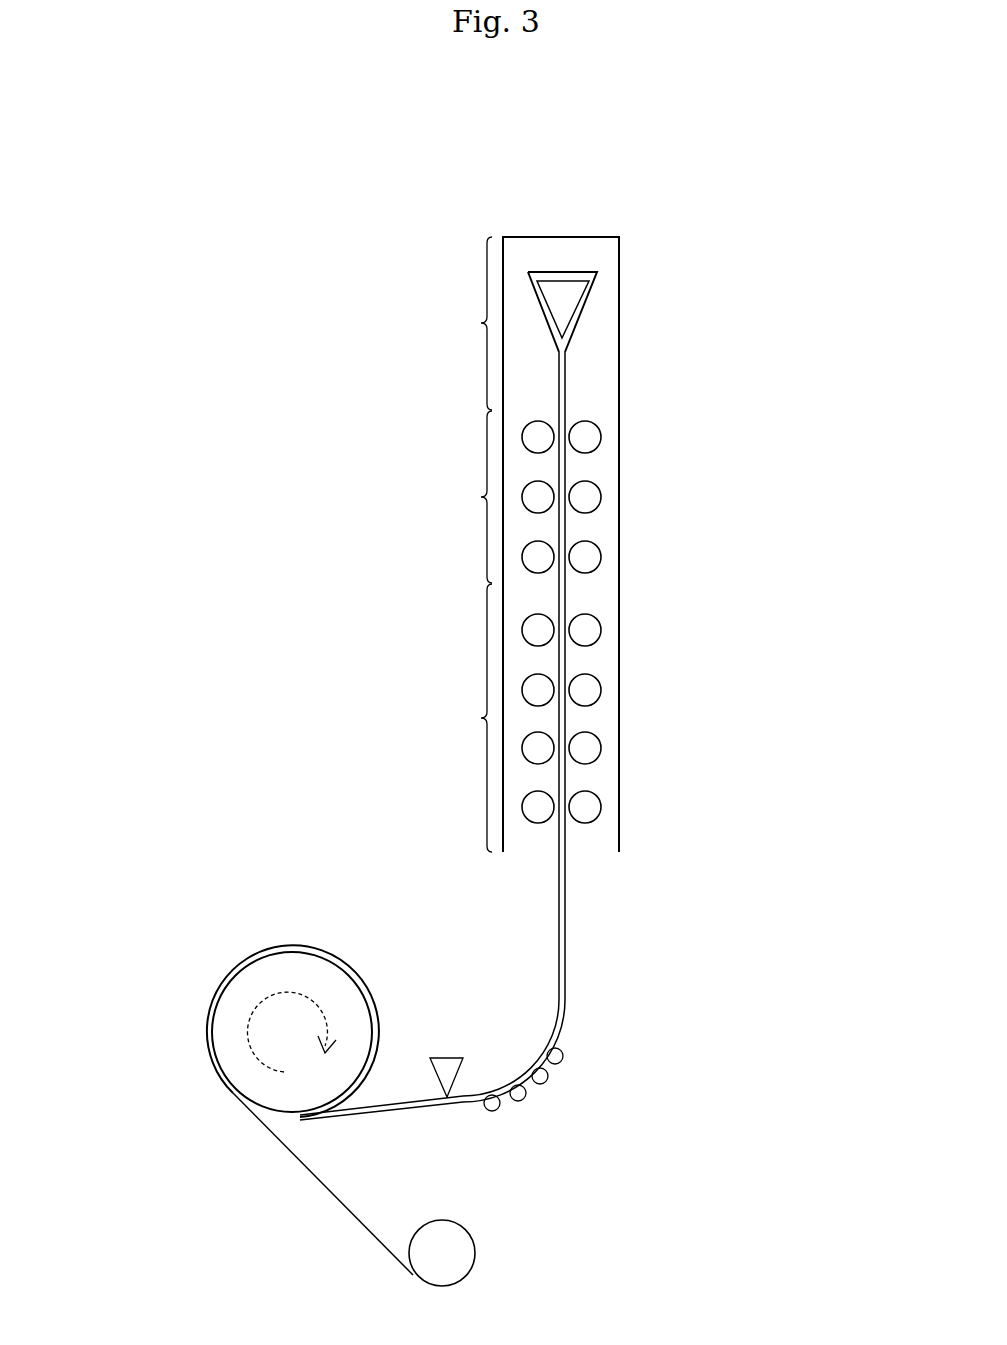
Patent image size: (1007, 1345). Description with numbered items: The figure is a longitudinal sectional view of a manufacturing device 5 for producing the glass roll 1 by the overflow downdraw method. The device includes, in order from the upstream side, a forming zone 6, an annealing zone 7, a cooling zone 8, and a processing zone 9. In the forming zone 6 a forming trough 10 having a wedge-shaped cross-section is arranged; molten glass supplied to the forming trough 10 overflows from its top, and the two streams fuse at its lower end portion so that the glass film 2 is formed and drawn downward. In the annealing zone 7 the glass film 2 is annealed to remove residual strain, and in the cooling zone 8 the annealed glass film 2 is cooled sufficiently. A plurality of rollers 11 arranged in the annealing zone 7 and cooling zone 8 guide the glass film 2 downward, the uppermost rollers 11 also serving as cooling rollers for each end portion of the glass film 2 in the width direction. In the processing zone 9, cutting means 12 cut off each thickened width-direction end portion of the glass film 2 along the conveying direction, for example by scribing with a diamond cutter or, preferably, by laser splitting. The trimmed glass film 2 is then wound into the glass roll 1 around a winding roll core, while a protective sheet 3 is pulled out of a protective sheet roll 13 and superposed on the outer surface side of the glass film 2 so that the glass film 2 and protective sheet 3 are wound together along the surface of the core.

The glass roll 1 is at (235, 1002).
The glass film 2 is at (567, 935).
The protective sheet 3 is at (308, 1192).
The manufacturing device 5 is at (688, 239).
The forming zone 6 is at (469, 323).
The annealing zone 7 is at (469, 497).
The cooling zone 8 is at (469, 718).
The processing zone 9 is at (415, 952).
The forming trough 10 is at (565, 305).
The rollers 11 is at (592, 440).
The cutting means 12 is at (447, 1055).
The protective sheet roll 13 is at (460, 1255).